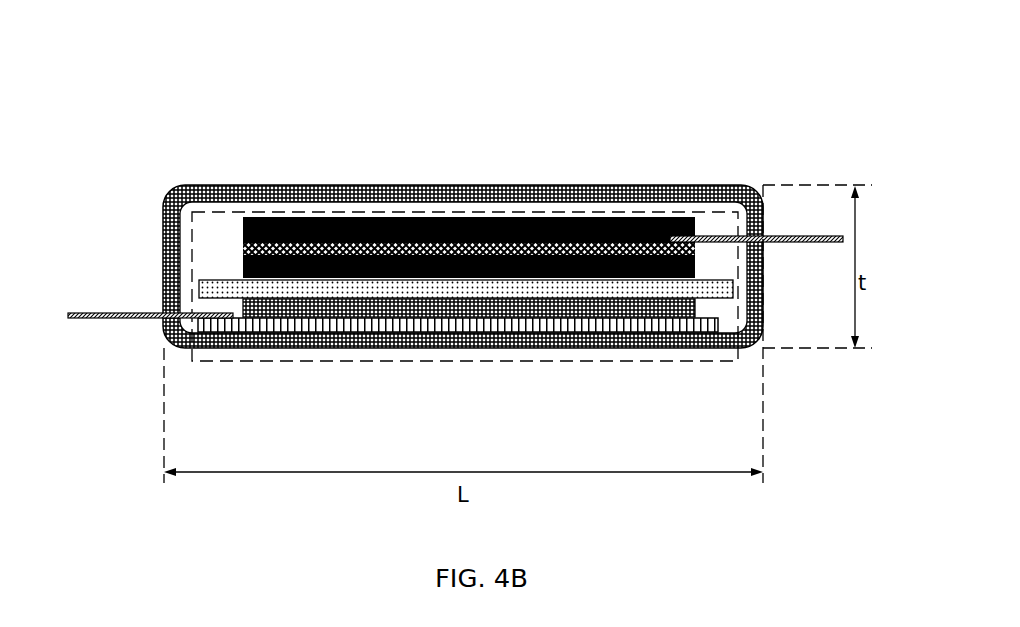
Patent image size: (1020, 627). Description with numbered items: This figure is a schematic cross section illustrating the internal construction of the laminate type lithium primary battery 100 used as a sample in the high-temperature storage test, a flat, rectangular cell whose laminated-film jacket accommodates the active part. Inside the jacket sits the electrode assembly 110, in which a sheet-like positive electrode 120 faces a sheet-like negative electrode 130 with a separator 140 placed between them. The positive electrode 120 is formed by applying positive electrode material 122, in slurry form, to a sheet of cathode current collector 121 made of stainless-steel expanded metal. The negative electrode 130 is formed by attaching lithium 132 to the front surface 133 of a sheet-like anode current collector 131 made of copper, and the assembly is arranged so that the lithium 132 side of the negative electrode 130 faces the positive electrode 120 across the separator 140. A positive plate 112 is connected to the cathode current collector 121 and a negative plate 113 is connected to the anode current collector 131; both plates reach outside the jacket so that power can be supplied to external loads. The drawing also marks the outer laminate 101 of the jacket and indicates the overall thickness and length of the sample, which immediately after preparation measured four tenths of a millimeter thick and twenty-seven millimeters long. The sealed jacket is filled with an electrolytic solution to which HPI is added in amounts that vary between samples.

The laminate type lithium primary battery 100 is at (303, 113).
The exterior film (laminate) 101 is at (745, 188).
The electrode assembly 110 is at (192, 243).
The positive plate 112 is at (782, 244).
The negative plate 113 is at (90, 322).
The positive electrode 120 is at (620, 95).
The cathode current collector 121 is at (467, 217).
The positive electrode material 122 is at (527, 217).
The negative electrode 130 is at (528, 418).
The anode current collector 131 is at (522, 320).
The lithium 132 is at (482, 307).
The surface 133 is at (352, 310).
The separator 140 is at (213, 290).